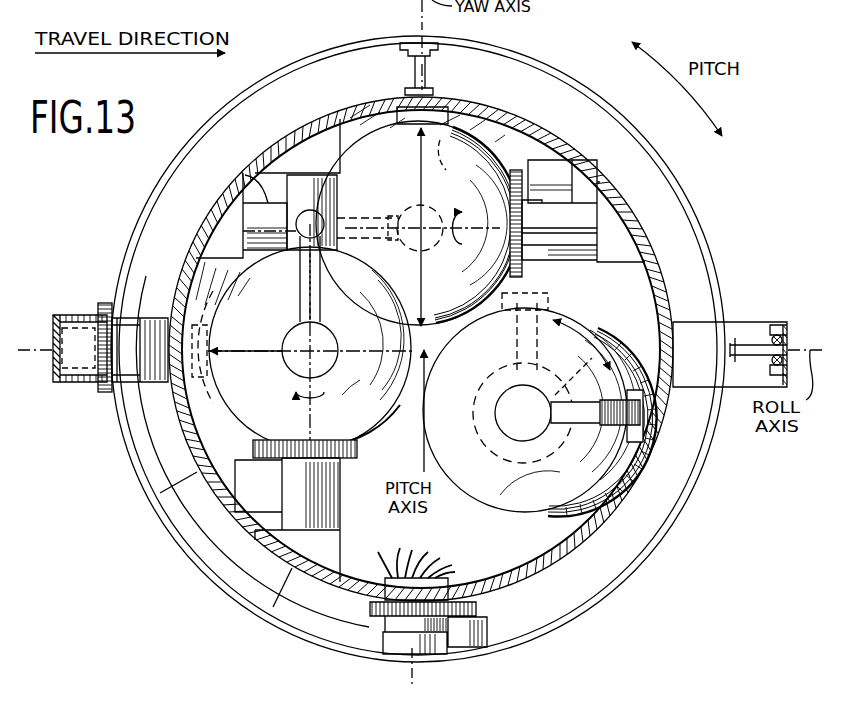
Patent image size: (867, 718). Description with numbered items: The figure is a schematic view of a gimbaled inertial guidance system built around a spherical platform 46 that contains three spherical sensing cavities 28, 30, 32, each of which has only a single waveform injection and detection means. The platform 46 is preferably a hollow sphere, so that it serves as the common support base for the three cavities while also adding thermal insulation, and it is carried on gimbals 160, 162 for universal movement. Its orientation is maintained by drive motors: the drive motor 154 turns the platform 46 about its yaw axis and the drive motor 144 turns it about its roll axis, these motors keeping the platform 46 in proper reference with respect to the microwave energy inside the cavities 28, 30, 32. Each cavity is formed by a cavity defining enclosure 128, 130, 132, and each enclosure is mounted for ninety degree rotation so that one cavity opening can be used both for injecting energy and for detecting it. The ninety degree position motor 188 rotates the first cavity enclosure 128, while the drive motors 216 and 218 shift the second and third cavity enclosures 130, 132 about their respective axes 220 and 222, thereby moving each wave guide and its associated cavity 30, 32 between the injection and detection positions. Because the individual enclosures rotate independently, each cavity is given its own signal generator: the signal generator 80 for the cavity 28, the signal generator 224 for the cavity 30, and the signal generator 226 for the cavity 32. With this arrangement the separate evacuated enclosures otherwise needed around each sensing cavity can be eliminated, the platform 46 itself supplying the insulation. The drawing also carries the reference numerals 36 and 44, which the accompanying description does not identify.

The spherical sensing cavity 28 is at (539, 396).
The spherical sensing cavity 30 is at (418, 218).
The spherical sensing cavity 32 is at (295, 362).
The spin axis arrow of first disc 36 is at (420, 154).
The spin axis arrow of second disc 44 is at (248, 352).
The spherical platform 46 is at (534, 112).
The signal generator 80 is at (490, 420).
The cavity defining enclosure 128 is at (576, 322).
The cavity defining enclosure 130 is at (497, 160).
The cavity defining enclosure 132 is at (390, 438).
The drive motor 144 is at (88, 325).
The drive motor 154 is at (487, 630).
The gimbal 160 is at (758, 322).
The gimbal 162 is at (700, 205).
The 90 degree position motor 188 is at (597, 401).
The drive motor 216 is at (560, 160).
The drive motor 218 is at (247, 460).
The axis 220 is at (486, 218).
The axis 222 is at (302, 395).
The signal generator 224 is at (262, 172).
The signal generator 226 is at (340, 206).